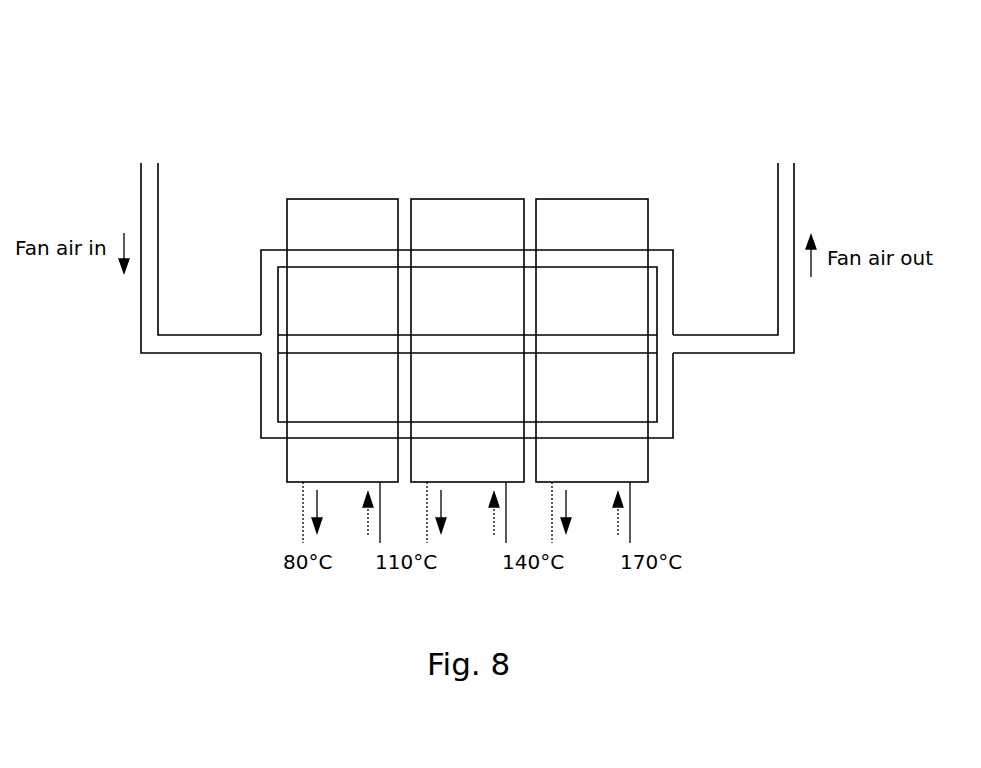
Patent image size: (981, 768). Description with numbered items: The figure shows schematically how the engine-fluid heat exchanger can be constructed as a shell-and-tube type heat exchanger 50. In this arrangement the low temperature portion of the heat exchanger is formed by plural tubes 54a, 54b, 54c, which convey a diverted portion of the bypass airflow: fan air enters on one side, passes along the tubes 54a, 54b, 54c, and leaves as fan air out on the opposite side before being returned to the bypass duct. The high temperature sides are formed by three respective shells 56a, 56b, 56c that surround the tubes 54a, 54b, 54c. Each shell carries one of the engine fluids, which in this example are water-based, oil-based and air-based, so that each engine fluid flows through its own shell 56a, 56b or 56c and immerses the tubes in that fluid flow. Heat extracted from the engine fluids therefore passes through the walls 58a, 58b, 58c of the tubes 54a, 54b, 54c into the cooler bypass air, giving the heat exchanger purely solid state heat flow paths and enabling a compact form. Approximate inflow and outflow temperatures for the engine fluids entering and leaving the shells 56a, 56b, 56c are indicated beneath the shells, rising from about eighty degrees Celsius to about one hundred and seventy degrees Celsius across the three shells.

The shell-and-tube type heat exchanger 50 is at (178, 70).
The tube 54a is at (298, 240).
The tube 54b is at (291, 325).
The tube 54c is at (298, 452).
The shell 56a is at (382, 198).
The shell 56b is at (510, 198).
The shell 56c is at (630, 198).
The tube wall 58a is at (651, 250).
The tube wall 58b is at (637, 335).
The tube wall 58c is at (630, 442).